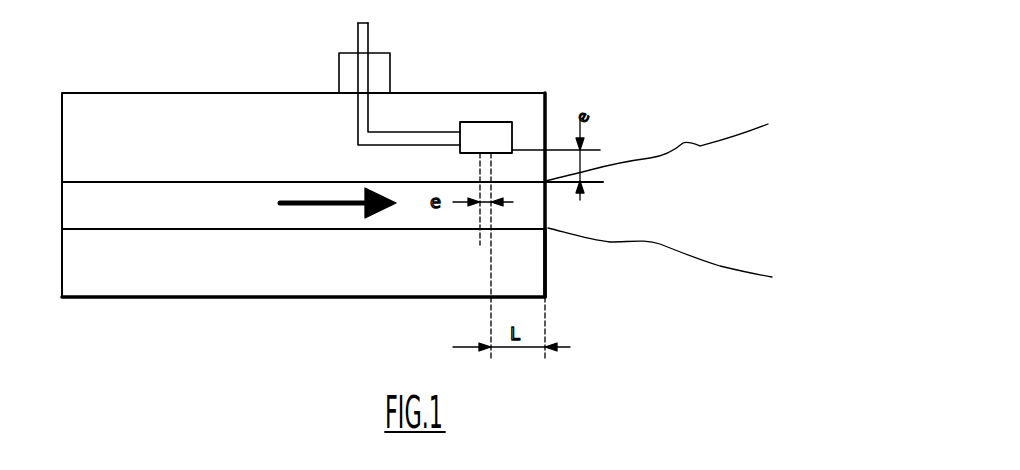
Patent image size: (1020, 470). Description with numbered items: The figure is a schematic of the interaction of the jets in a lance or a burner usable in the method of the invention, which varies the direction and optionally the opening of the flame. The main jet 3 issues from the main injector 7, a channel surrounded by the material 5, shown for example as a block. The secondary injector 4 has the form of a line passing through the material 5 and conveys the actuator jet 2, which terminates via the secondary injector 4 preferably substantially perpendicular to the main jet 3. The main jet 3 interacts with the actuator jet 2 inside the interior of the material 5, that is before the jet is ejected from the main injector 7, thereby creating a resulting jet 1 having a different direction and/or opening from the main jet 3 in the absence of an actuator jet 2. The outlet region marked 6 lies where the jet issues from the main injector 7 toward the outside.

The resulting jet 1 is at (685, 160).
The actuator jet 2 is at (480, 160).
The main jet 3 is at (135, 205).
The secondary injector 4 is at (490, 172).
The material 5 is at (218, 126).
The outlet face 6 is at (548, 265).
The main injector 7 is at (238, 229).